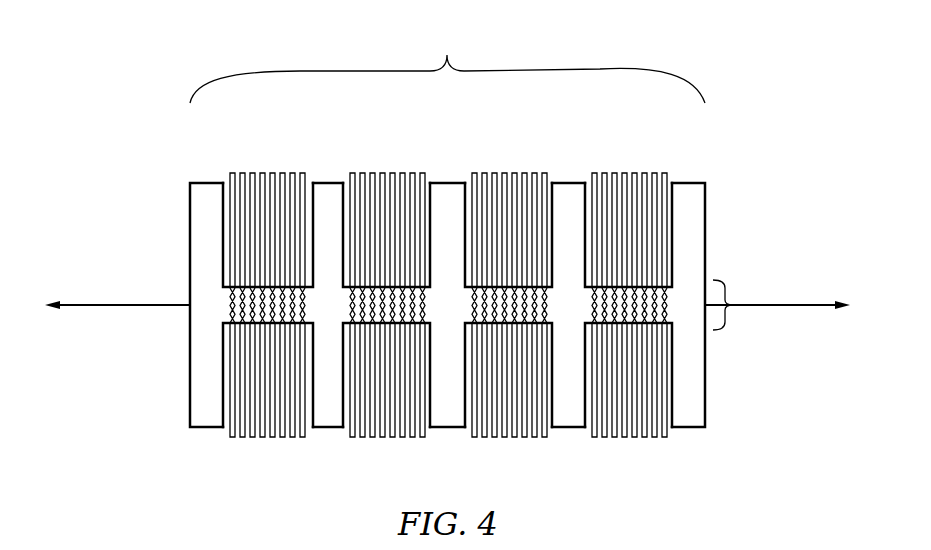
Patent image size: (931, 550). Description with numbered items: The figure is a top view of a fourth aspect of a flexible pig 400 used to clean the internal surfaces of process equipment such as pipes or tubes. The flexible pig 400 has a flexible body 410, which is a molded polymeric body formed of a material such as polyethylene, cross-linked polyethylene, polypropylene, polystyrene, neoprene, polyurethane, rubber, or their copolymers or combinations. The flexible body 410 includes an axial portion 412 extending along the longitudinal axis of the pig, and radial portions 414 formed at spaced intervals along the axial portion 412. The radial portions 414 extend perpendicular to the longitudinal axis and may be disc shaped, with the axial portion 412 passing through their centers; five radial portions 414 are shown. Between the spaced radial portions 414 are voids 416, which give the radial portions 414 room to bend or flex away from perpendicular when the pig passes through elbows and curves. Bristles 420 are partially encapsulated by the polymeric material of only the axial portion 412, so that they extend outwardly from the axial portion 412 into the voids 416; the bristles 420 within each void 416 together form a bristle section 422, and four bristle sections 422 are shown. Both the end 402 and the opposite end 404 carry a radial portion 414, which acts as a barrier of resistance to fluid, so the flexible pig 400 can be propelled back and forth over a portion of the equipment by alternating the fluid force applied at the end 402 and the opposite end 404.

The flexible pig 400 is at (186, 45).
The end 402 is at (189, 403).
The opposite end 404 is at (706, 392).
The flexible body 410 is at (447, 68).
The axial portion 412 is at (737, 299).
The radial portions 414 is at (330, 181).
The voids 416 is at (261, 165).
The bristles 420 is at (228, 178).
The bristle sections 422 is at (426, 172).